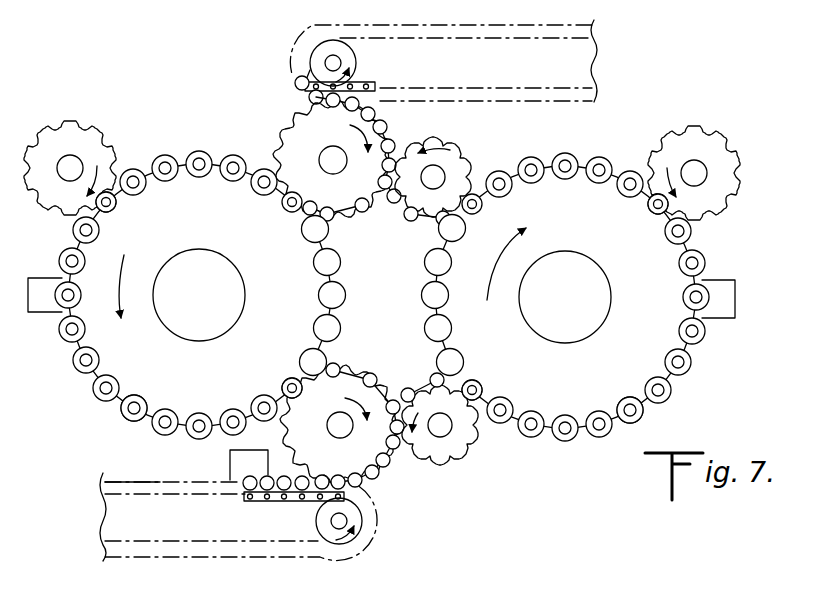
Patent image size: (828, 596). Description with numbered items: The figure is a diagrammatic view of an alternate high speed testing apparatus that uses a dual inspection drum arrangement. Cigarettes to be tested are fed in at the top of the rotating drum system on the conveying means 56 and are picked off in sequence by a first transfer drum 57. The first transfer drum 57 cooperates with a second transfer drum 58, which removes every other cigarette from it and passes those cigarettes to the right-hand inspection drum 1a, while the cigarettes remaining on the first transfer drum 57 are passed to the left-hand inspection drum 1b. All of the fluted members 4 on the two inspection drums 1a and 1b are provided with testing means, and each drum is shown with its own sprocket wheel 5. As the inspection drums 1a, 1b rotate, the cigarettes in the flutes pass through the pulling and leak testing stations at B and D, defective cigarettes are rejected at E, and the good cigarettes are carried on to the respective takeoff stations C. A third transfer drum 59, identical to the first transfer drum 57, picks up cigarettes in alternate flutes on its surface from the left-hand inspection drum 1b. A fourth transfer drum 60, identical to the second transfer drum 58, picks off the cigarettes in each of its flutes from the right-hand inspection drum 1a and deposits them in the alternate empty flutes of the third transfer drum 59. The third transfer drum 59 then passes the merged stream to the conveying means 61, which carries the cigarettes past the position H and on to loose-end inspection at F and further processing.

The right-hand inspection drum 1a is at (582, 384).
The left-hand inspection drum 1b is at (213, 389).
The fluted members 4 is at (90, 392).
The sprocket wheel 5 is at (84, 130).
The conveying means 56 is at (303, 38).
The first transfer drum 57 is at (300, 129).
The second transfer drum 58 is at (456, 152).
The third transfer drum 59 is at (356, 377).
The fourth transfer drum 60 is at (449, 452).
The conveying means 61 is at (254, 548).
The pulling and leak testing station B is at (120, 216).
The takeoff station C is at (285, 372).
The pulling and leak testing station D is at (41, 276).
The rejecting station E is at (117, 421).
The loose-end inspection station F is at (226, 468).
The position H is at (148, 481).